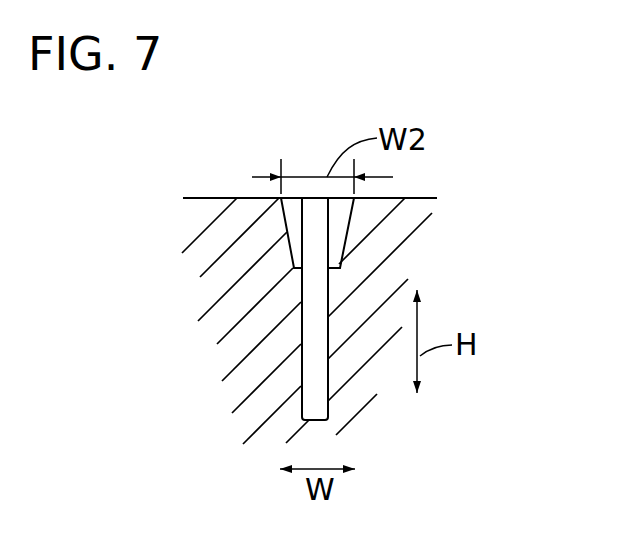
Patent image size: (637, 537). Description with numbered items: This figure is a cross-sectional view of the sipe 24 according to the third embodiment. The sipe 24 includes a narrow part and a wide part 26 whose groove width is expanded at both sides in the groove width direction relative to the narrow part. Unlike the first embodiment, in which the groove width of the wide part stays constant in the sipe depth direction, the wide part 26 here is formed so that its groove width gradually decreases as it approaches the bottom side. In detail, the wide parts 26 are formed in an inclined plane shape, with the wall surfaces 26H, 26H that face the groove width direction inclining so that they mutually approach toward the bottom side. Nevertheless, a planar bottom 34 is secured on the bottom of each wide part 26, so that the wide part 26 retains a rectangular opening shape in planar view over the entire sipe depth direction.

The sipe 24 is at (316, 161).
The wide part 26 is at (291, 266).
The wall surface 26H is at (286, 218).
The planar bottom 34 is at (338, 268).